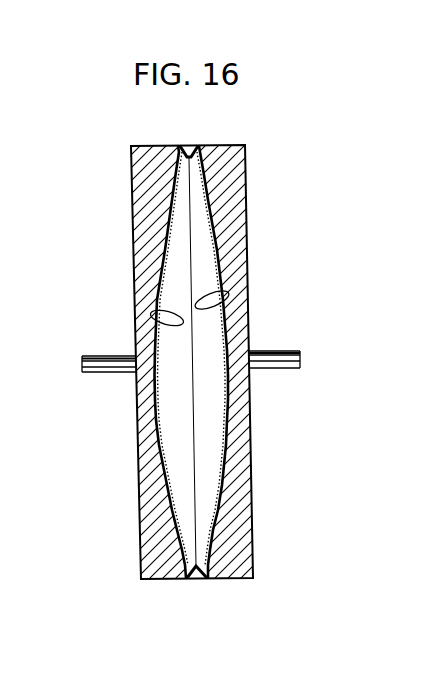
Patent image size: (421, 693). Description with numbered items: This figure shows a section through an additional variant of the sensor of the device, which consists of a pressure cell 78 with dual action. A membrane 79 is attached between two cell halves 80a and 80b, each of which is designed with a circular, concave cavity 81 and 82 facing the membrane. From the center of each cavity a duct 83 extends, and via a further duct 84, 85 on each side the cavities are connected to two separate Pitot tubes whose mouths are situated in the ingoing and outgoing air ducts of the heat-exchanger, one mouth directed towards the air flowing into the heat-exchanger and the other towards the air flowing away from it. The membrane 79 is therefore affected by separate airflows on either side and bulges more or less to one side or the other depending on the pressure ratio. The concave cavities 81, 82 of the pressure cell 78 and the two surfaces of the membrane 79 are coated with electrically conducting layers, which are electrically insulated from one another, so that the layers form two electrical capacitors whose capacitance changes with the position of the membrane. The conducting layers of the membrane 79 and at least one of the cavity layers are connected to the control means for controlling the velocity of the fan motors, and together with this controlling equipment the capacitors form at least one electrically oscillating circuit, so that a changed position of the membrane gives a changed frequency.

The pressure cell 78 is at (249, 143).
The membrane 79 is at (193, 204).
The cell half 80a is at (150, 241).
The cell half 80b is at (229, 241).
The concave cavity 81 is at (152, 310).
The concave cavity 82 is at (229, 301).
The duct 83 is at (135, 353).
The duct 84 is at (85, 373).
The duct 85 is at (292, 369).